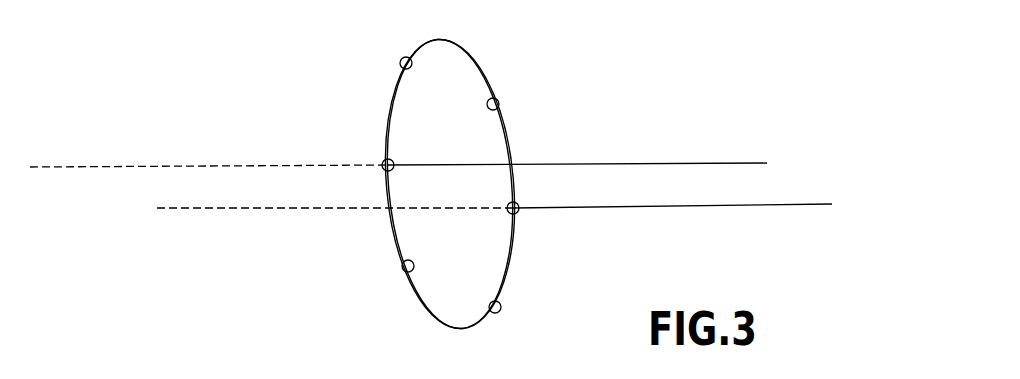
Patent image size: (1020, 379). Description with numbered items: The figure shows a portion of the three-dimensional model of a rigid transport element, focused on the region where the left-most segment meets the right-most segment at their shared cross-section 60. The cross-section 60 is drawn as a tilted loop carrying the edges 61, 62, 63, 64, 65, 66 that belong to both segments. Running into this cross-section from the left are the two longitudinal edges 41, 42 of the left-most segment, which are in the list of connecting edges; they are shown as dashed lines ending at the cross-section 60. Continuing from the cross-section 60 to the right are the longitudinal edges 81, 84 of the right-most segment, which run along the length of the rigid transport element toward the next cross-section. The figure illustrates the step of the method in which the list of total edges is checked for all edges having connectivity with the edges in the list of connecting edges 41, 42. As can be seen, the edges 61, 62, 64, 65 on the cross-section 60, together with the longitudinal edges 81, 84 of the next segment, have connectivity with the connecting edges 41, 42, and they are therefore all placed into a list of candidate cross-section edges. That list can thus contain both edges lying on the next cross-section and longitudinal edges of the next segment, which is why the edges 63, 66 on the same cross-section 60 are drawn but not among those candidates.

The edge 41 is at (115, 167).
The edge 42 is at (188, 208).
The cross-section 60 is at (478, 72).
The edge 61 is at (387, 193).
The edge 62 is at (390, 120).
The edge 63 is at (458, 43).
The edge 64 is at (503, 137).
The edge 65 is at (515, 248).
The edge 66 is at (458, 332).
The edge 81 is at (657, 163).
The edge 84 is at (698, 204).